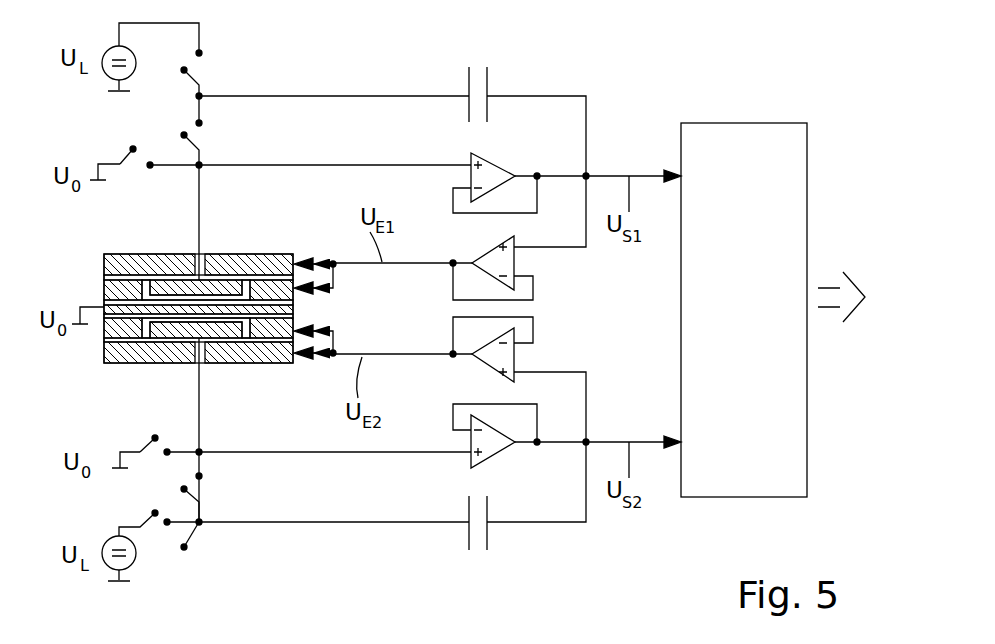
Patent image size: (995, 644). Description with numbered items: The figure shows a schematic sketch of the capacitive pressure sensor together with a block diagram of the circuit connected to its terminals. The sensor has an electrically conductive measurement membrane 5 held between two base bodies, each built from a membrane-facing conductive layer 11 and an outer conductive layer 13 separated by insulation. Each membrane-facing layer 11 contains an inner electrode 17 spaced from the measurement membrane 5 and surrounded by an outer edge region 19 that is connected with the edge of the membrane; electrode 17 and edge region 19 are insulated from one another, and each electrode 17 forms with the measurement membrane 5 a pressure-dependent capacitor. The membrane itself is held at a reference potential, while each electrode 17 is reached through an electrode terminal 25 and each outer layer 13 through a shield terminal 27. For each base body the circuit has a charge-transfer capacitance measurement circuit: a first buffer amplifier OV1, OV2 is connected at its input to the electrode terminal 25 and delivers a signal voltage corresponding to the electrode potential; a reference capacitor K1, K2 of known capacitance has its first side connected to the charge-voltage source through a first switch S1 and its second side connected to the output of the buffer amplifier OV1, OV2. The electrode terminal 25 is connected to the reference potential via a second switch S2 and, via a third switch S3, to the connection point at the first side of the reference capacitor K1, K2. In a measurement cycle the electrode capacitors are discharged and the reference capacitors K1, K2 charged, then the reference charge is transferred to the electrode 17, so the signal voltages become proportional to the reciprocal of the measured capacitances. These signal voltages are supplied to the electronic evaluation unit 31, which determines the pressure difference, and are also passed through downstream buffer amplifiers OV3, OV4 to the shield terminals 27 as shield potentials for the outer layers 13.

The measurement membrane 5 is at (167, 307).
The membrane-facing layer 11 is at (104, 284).
The layer facing away from the membrane 13 is at (104, 257).
The electrode 17 is at (224, 288).
The outer edge region 19 is at (295, 325).
The electrode terminal 25 is at (195, 262).
The shield terminal 27 is at (333, 262).
The electronic evaluation unit 31 is at (757, 321).
The first switch S1 is at (188, 72).
The second switch S2 is at (123, 157).
The third switch S3 is at (188, 138).
The reference capacitor K1 is at (458, 75).
The reference capacitor K2 is at (500, 550).
The first buffer amplifier OV1 is at (462, 155).
The first buffer amplifier OV2 is at (500, 458).
The downstream buffer amplifier OV3 is at (478, 245).
The downstream buffer amplifier OV4 is at (477, 377).